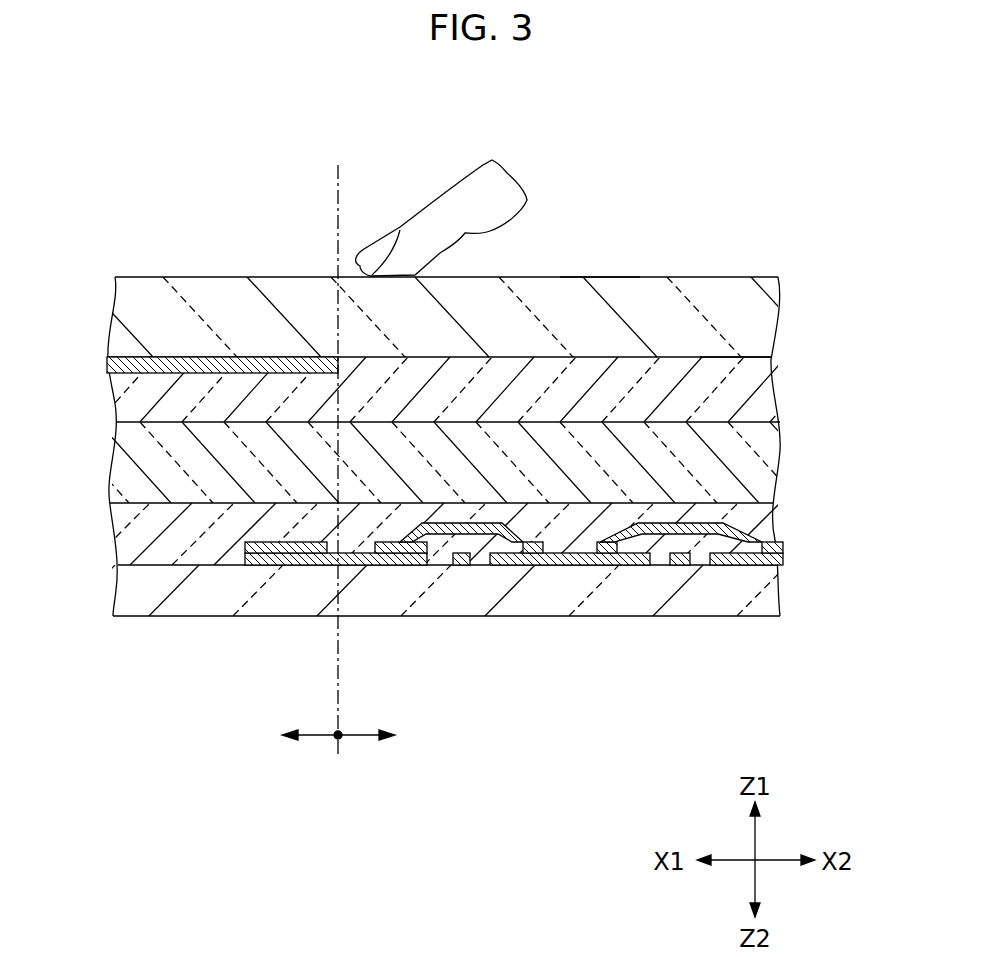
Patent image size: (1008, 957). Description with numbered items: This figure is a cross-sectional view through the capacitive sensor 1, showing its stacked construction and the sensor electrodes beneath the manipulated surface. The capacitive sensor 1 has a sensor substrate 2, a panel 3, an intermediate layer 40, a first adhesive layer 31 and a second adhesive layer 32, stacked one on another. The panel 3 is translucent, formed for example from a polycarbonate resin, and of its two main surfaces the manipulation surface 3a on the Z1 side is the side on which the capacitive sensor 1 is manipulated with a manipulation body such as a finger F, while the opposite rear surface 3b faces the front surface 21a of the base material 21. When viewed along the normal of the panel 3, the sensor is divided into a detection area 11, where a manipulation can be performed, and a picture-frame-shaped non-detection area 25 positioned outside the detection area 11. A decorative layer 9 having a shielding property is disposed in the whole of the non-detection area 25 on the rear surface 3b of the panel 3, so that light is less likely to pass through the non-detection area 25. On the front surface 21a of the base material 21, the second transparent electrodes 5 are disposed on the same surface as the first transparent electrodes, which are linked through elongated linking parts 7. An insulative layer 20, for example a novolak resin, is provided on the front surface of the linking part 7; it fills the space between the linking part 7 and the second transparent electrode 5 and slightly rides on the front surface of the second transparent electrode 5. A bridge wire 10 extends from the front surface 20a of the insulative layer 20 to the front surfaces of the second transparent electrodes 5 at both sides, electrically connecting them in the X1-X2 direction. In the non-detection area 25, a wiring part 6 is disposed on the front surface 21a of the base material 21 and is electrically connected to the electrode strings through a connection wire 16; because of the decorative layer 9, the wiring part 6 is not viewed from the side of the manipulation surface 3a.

The capacitive sensor 1 is at (684, 157).
The sensor substrate 2 is at (812, 600).
The panel 3 is at (768, 292).
The manipulation surface 3a is at (595, 265).
The rear surface 3b is at (745, 357).
The second transparent electrode 5 is at (557, 566).
The wiring part 6 is at (243, 566).
The linking part 7 is at (458, 566).
The decorative layer 9 is at (108, 366).
The bridge wire 10 is at (452, 522).
The detection area 11 is at (381, 737).
The connection wire 16 is at (290, 566).
The insulative layer 20 is at (440, 553).
The front surface of insulative layer 20a is at (487, 536).
The base material 21 is at (733, 605).
The front surface 21a is at (598, 566).
The non-detection area 25 is at (291, 737).
The first adhesive layer 31 is at (768, 393).
The second adhesive layer 32 is at (767, 525).
The intermediate layer 40 is at (766, 460).
The finger F is at (432, 220).